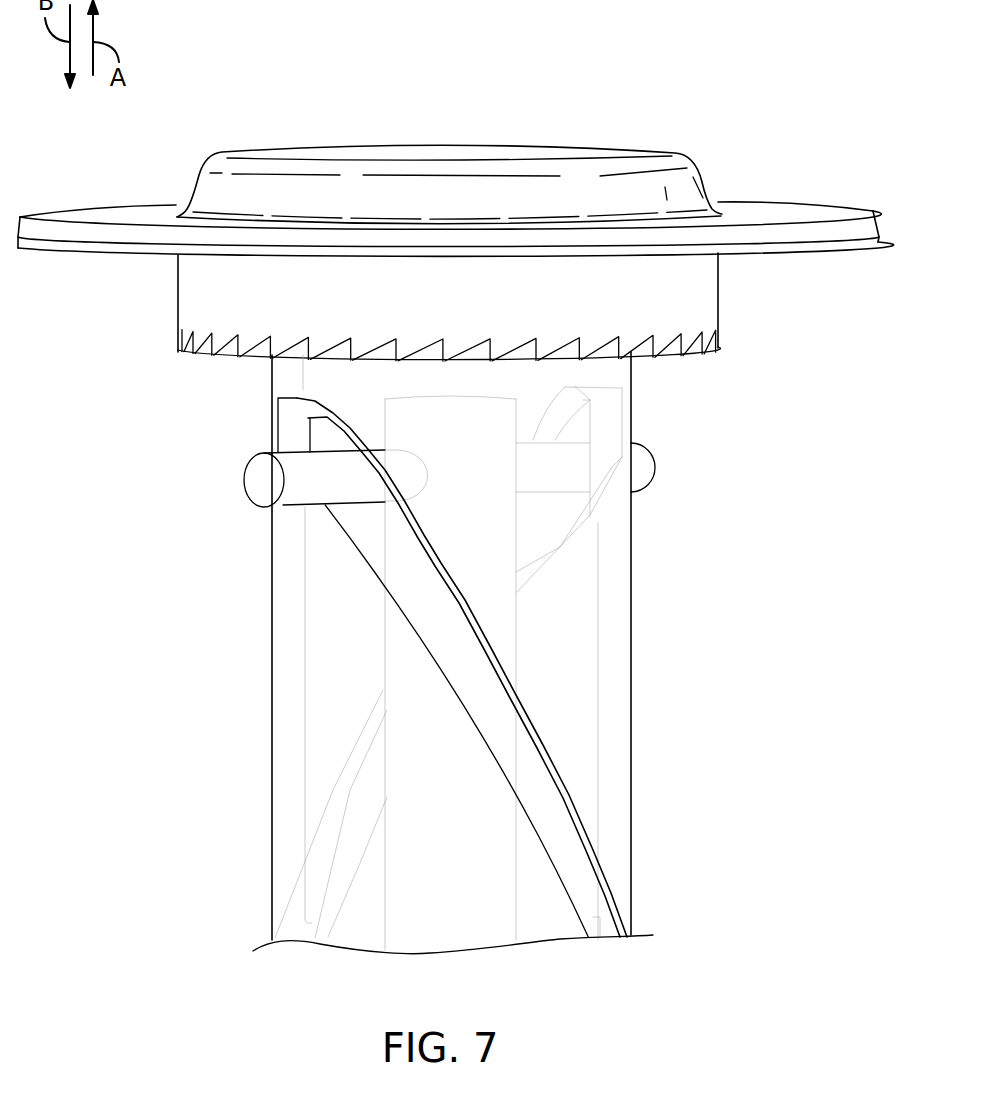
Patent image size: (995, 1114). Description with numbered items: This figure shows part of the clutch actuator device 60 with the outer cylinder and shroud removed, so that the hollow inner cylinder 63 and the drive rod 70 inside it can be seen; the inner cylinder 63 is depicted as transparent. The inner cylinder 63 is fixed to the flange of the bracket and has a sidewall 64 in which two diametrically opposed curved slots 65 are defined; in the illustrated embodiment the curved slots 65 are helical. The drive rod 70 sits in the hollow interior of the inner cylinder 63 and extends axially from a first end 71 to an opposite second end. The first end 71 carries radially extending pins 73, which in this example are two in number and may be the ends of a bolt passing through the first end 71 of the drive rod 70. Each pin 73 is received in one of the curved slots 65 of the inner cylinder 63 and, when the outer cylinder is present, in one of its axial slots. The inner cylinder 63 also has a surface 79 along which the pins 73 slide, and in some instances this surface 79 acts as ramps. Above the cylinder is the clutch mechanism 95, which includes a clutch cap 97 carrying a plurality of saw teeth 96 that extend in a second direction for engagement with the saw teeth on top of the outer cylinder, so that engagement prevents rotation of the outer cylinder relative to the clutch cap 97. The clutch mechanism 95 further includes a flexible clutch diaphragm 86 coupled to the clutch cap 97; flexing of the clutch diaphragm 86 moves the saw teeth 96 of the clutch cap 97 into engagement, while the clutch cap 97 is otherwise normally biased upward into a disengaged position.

The clutch actuator device 60 is at (446, 678).
The inner cylinder 63 is at (544, 925).
The sidewall 64 is at (617, 685).
The curved slots 65 is at (494, 719).
The drive rod 70 is at (463, 656).
The first end 71 is at (528, 402).
The pins 73 is at (258, 483).
The surface 79 is at (370, 835).
The clutch diaphragm 86 is at (679, 155).
The clutch mechanism 95 is at (480, 307).
The saw teeth 96 is at (510, 334).
The clutch cap 97 is at (190, 300).